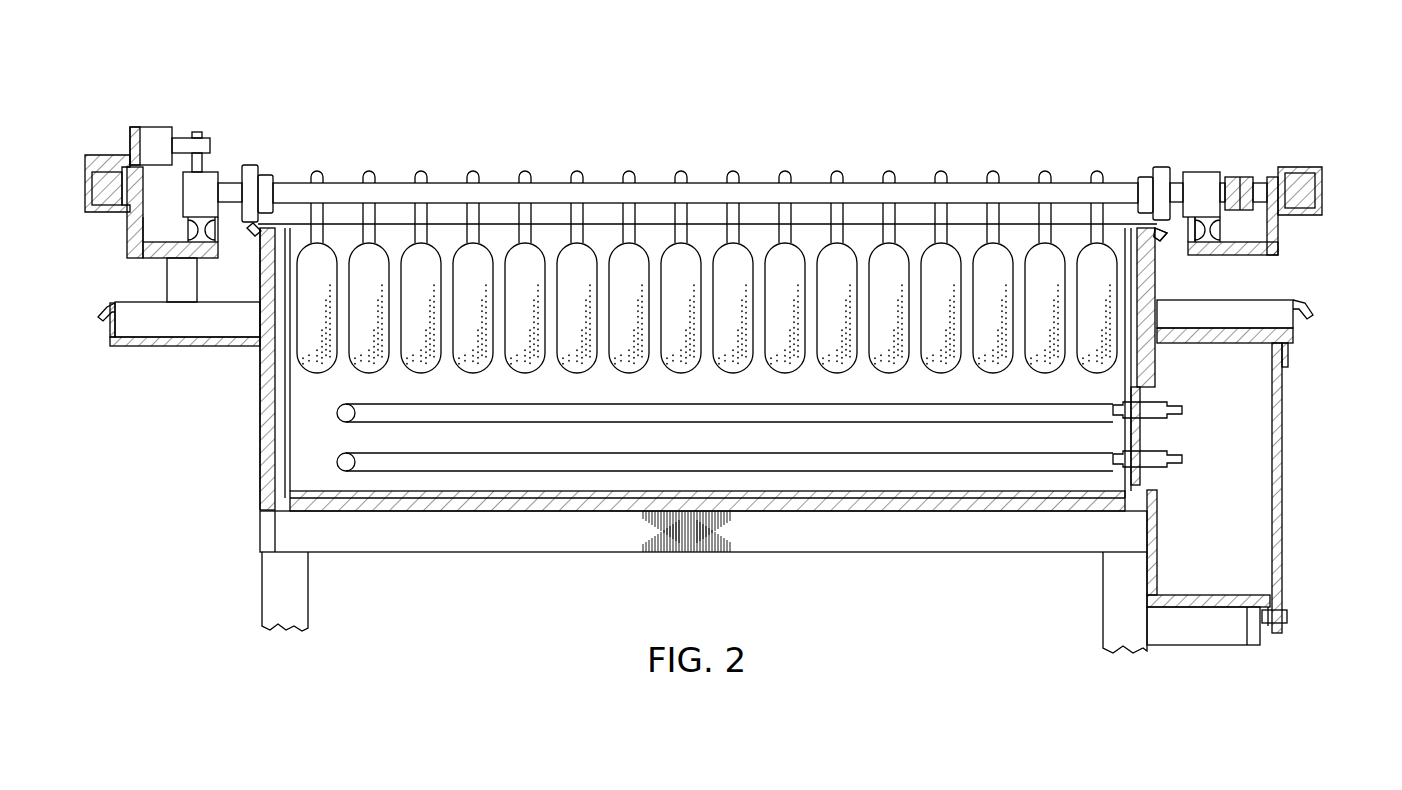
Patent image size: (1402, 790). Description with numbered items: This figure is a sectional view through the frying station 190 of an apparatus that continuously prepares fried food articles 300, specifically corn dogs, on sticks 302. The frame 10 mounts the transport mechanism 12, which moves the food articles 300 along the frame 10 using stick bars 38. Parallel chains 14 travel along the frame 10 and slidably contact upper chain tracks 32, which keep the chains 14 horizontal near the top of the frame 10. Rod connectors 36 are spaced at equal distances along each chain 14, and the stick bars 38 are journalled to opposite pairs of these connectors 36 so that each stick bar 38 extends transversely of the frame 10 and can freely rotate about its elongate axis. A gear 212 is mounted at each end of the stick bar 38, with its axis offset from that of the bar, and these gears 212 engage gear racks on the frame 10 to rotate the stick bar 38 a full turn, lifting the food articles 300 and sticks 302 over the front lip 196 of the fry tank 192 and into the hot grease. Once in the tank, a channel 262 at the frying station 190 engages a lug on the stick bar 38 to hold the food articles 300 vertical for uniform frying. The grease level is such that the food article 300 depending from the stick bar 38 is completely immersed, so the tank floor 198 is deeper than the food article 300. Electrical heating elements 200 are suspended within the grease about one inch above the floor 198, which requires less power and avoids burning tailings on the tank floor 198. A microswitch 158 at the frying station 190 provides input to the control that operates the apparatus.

The frame 10 is at (87, 183).
The transport mechanism 12 is at (1195, 156).
The chains 14 is at (190, 222).
The upper chain tracks 32 is at (1248, 257).
The rod connectors 36 is at (205, 172).
The stick bars 38 is at (550, 182).
The microswitch 158 is at (153, 127).
The frying station 190 is at (228, 382).
The fry tank 192 is at (260, 485).
The front lip 196 is at (1163, 237).
The tank floor 198 is at (780, 500).
The electrical heating elements 200 is at (337, 415).
The gear 212 is at (252, 165).
The channel 262 is at (1243, 180).
The food articles 300 is at (878, 253).
The sticks 302 is at (740, 217).